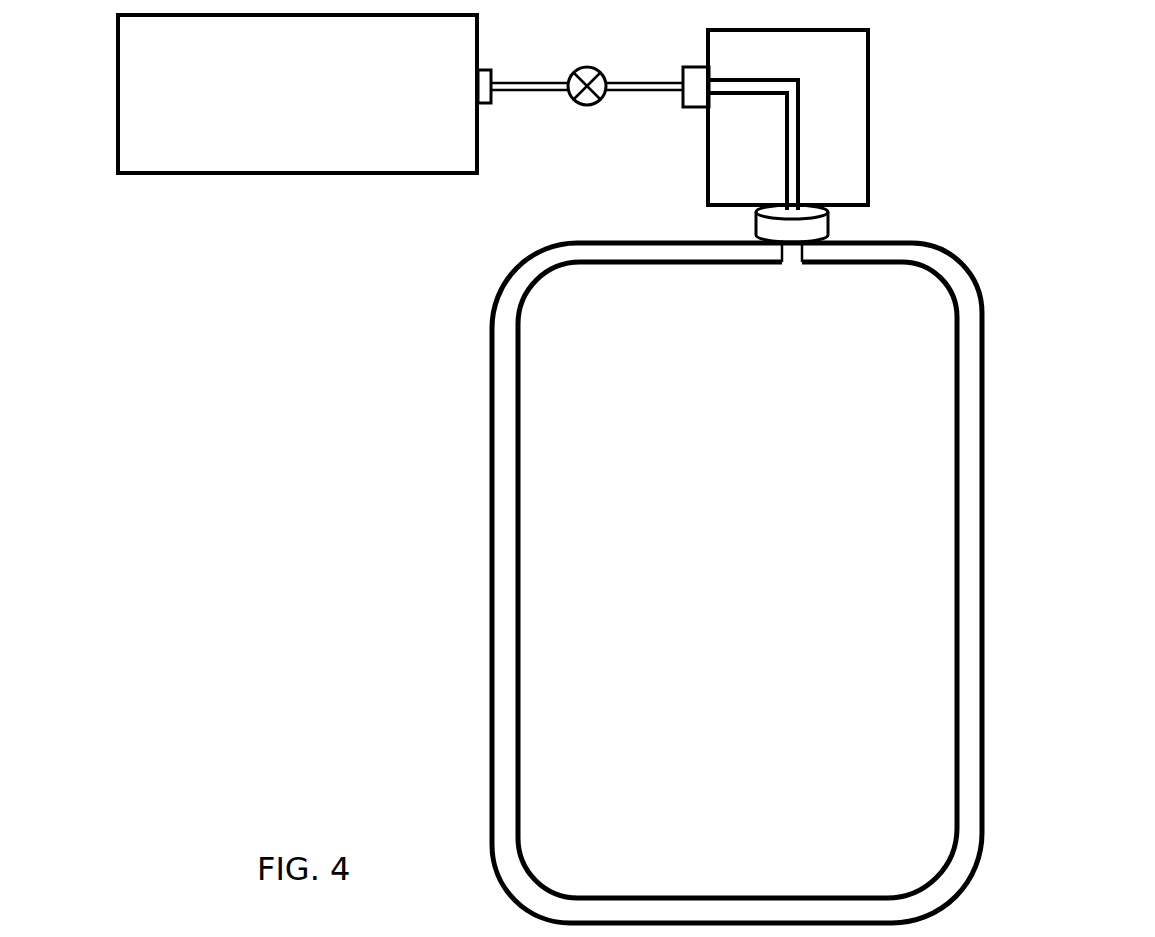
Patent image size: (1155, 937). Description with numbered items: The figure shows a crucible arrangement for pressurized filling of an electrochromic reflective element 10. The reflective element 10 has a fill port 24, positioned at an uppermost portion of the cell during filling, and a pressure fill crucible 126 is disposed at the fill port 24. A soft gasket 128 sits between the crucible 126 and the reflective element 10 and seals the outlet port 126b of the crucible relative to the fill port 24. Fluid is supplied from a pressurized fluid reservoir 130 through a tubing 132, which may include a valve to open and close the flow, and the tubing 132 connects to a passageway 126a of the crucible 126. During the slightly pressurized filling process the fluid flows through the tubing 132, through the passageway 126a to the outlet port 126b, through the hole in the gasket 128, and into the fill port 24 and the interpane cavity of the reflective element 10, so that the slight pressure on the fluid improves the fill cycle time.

The electrochromic reflective element 10 is at (1002, 610).
The fill port 24 is at (793, 265).
The pressure fill crucible 126 is at (845, 118).
The passageway 126a is at (785, 113).
The outlet port 126b is at (790, 192).
The soft gasket 128 is at (845, 222).
The pressurized fluid reservoir 130 is at (302, 153).
The tubing 132 is at (547, 103).